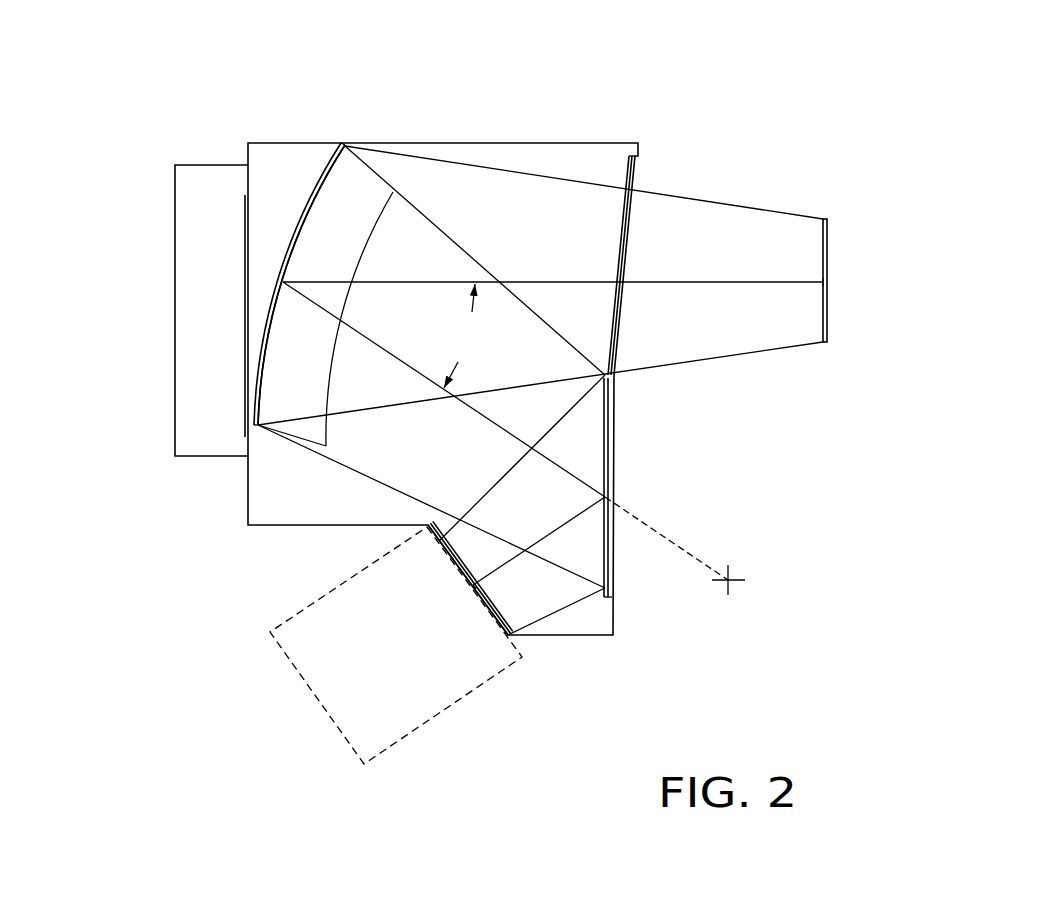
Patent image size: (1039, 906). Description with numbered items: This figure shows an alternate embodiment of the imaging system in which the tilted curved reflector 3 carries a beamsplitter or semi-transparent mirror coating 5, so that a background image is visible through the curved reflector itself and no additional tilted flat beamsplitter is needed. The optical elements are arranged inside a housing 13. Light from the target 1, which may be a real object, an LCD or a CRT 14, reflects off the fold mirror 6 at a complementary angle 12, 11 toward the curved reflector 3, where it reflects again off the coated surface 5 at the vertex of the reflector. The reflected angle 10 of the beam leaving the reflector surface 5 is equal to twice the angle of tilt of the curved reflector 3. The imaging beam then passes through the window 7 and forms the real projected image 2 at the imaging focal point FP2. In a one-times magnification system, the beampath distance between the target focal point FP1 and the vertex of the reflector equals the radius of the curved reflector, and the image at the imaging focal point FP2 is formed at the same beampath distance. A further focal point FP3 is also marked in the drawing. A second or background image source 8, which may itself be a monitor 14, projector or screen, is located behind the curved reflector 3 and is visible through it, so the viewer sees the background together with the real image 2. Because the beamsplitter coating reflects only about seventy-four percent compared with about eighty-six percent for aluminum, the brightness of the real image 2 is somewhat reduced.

The target 1 is at (380, 651).
The real projected image 2 is at (881, 266).
The curved reflector 3 is at (268, 248).
The coated surface 5 is at (219, 285).
The fold mirror 6 is at (664, 530).
The window 7 is at (670, 231).
The background image target 8 is at (170, 310).
The reflected angle 10 is at (465, 336).
The complementary angle 11 is at (570, 437).
The complementary angle 12 is at (576, 550).
The housing 13 is at (486, 317).
The CRT 14 is at (298, 645).
The target focal point FP1 is at (414, 706).
The imaging focal point FP2 is at (915, 334).
The focal point 3 FP3 is at (796, 562).